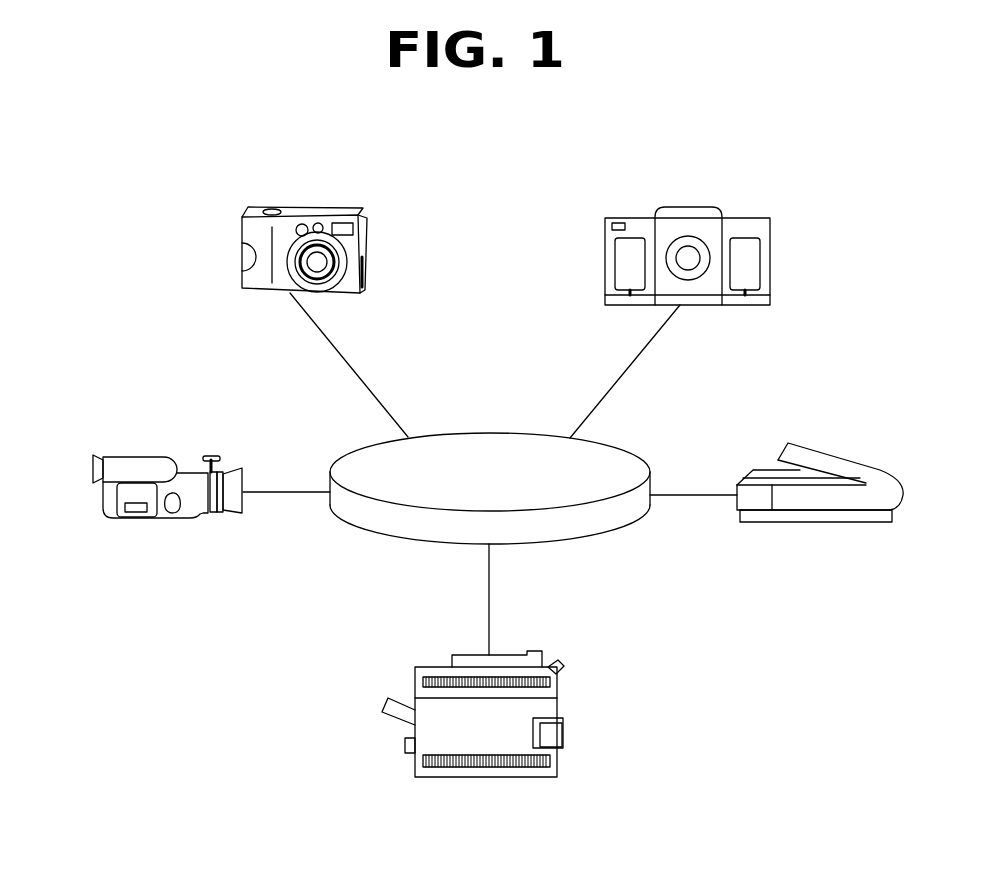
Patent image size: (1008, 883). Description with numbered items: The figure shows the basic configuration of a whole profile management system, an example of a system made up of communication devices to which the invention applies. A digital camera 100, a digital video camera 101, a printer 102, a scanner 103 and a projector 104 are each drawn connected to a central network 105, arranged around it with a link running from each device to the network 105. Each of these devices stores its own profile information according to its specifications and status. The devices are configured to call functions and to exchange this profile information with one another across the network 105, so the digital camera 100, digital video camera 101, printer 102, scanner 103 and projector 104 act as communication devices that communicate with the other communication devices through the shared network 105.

The digital camera 100 is at (242, 252).
The digital video camera 101 is at (125, 457).
The printer 102 is at (557, 702).
The scanner 103 is at (840, 457).
The projector 104 is at (770, 258).
The network 105 is at (493, 433).